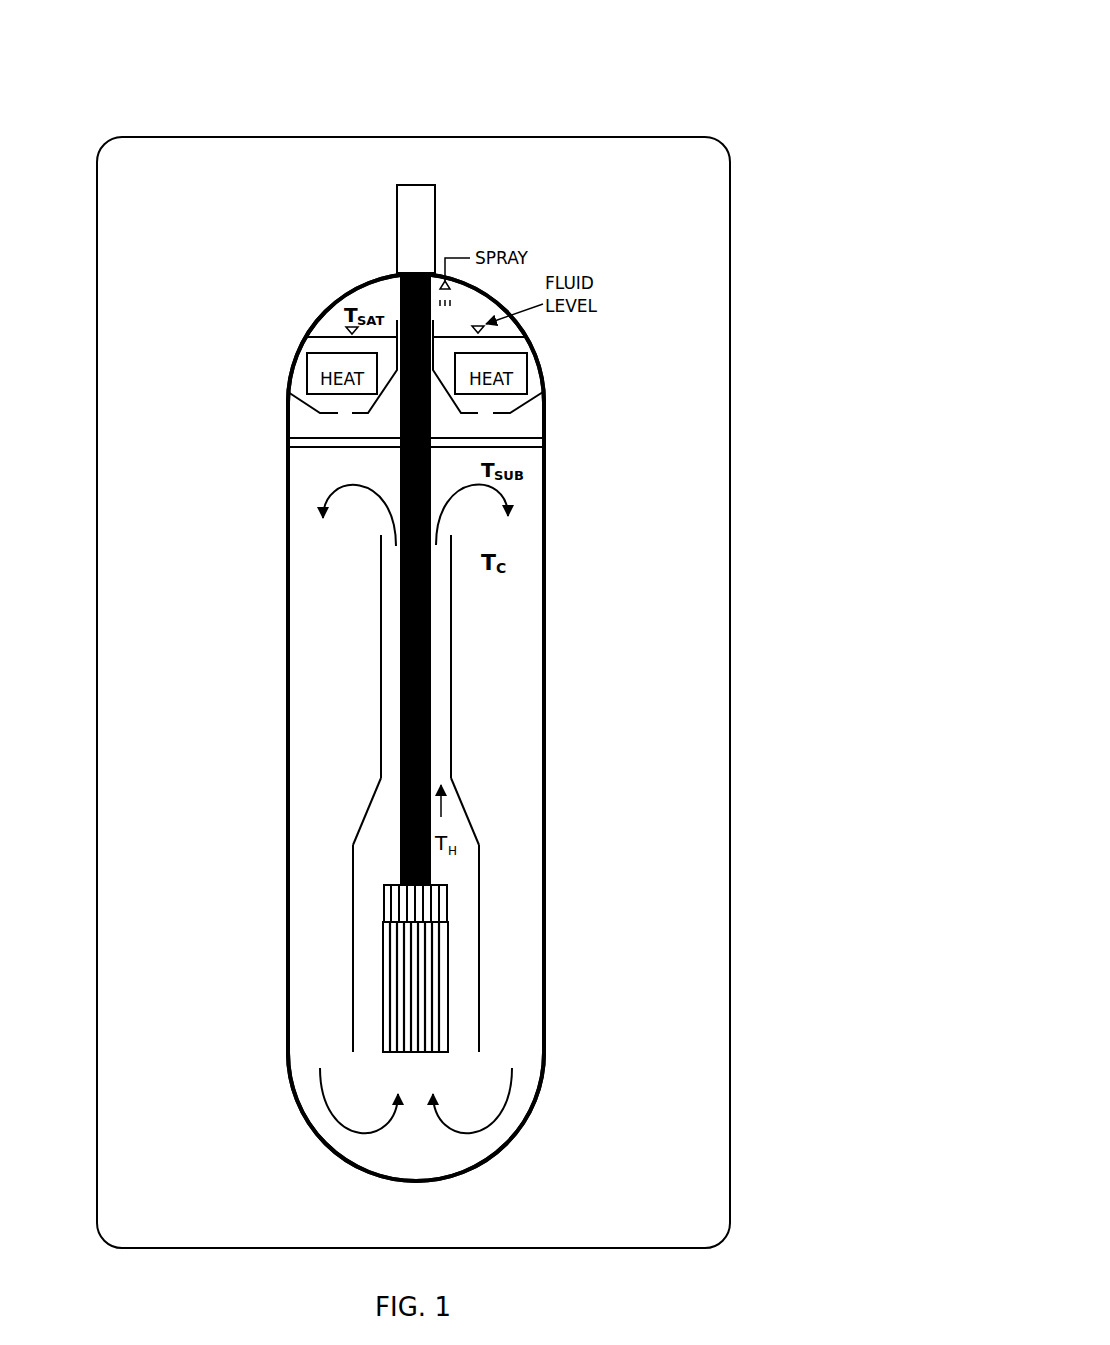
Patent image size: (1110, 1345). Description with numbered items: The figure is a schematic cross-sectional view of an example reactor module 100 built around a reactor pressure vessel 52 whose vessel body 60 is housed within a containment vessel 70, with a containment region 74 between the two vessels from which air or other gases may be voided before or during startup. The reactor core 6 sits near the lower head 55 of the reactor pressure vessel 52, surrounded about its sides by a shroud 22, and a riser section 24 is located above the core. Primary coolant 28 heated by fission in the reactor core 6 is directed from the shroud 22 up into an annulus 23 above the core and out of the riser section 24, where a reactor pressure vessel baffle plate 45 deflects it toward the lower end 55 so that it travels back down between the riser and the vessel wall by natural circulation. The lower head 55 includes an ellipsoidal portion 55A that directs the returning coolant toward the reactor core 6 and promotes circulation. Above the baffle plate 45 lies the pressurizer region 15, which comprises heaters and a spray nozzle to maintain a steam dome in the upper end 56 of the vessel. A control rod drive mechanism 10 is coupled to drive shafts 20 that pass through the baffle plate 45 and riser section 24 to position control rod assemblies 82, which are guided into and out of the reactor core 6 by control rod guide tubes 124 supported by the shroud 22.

The reactor module 100 is at (694, 86).
The pressurizer region 15 is at (301, 301).
The control rod drive mechanism 10 is at (397, 230).
The drive shaft 20 is at (400, 692).
The upper end 56 is at (456, 338).
The reactor pressure vessel baffle plate 45 is at (465, 425).
The primary coolant 28 is at (428, 808).
The riser section 24 is at (504, 656).
The containment vessel 70 is at (462, 692).
The containment region 74 is at (192, 646).
The vessel body 60 is at (464, 750).
The annulus 23 is at (349, 801).
The control rod assembly 82 is at (311, 872).
The shroud 22 is at (341, 948).
The control rod guide tube 124 is at (531, 943).
The reactor core 6 is at (500, 987).
The reactor pressure vessel 52 is at (590, 826).
The lower head 55 is at (330, 1155).
The ellipsoidal portion 55A is at (460, 1177).